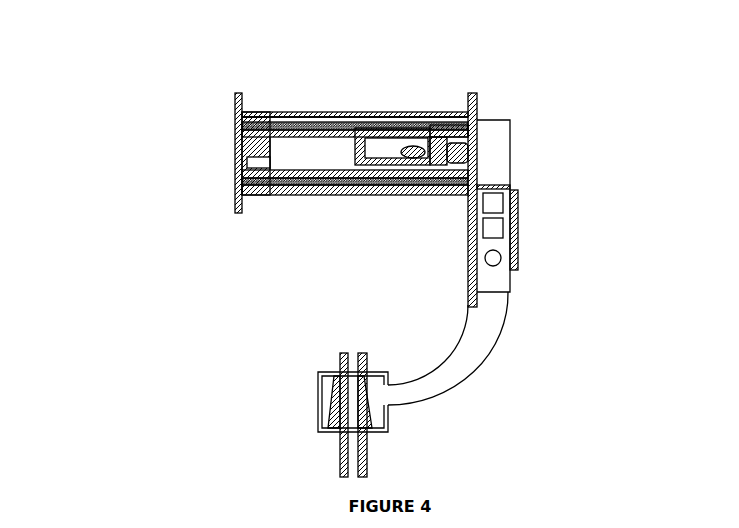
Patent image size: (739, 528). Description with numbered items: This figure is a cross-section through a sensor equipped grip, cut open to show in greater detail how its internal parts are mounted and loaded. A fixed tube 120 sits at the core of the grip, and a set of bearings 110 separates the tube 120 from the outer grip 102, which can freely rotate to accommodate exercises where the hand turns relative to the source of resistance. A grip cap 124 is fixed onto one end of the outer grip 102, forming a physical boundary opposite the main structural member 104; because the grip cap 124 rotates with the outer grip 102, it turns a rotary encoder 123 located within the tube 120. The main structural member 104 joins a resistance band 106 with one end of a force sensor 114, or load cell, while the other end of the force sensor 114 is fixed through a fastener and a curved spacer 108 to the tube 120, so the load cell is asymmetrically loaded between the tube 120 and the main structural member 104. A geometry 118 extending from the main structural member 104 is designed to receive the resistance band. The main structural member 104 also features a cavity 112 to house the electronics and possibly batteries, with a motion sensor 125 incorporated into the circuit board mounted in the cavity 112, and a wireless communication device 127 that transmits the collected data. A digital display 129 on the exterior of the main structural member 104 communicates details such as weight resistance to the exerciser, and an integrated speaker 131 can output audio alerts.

The outer grip 102 is at (337, 112).
The main structural member 104 is at (502, 157).
The resistance band 106 is at (367, 462).
The curved spacer 108 is at (365, 140).
The bearings 110 is at (418, 172).
The cavity 112 is at (493, 279).
The force sensor 114 is at (443, 148).
The geometry 118 is at (332, 403).
The tube 120 is at (317, 130).
The rotary encoder 123 is at (262, 120).
The grip cap 124 is at (235, 163).
The motion sensor 125 is at (502, 203).
The wireless communication device 127 is at (509, 230).
The digital display 129 is at (513, 247).
The speaker 131 is at (513, 268).